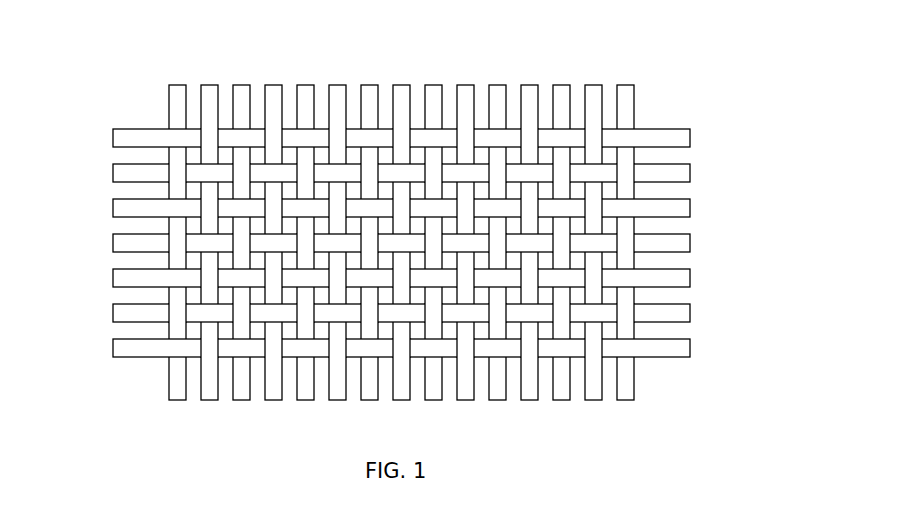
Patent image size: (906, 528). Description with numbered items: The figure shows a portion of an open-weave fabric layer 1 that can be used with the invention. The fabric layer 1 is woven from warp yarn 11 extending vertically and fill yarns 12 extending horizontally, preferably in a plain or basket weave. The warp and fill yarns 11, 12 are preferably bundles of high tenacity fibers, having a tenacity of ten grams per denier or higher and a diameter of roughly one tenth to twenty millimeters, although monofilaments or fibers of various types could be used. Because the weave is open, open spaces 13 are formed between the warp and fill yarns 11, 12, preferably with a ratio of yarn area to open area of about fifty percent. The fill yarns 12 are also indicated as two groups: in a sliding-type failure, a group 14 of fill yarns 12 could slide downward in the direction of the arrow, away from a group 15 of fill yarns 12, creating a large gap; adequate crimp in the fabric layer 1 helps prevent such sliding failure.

The fabric layer 1 is at (93, 416).
The warp yarn 11 is at (628, 108).
The fill yarns 12 is at (663, 347).
The open spaces 13 is at (610, 225).
The group of fill yarns 14 is at (407, 298).
The group of fill yarns 15 is at (100, 103).